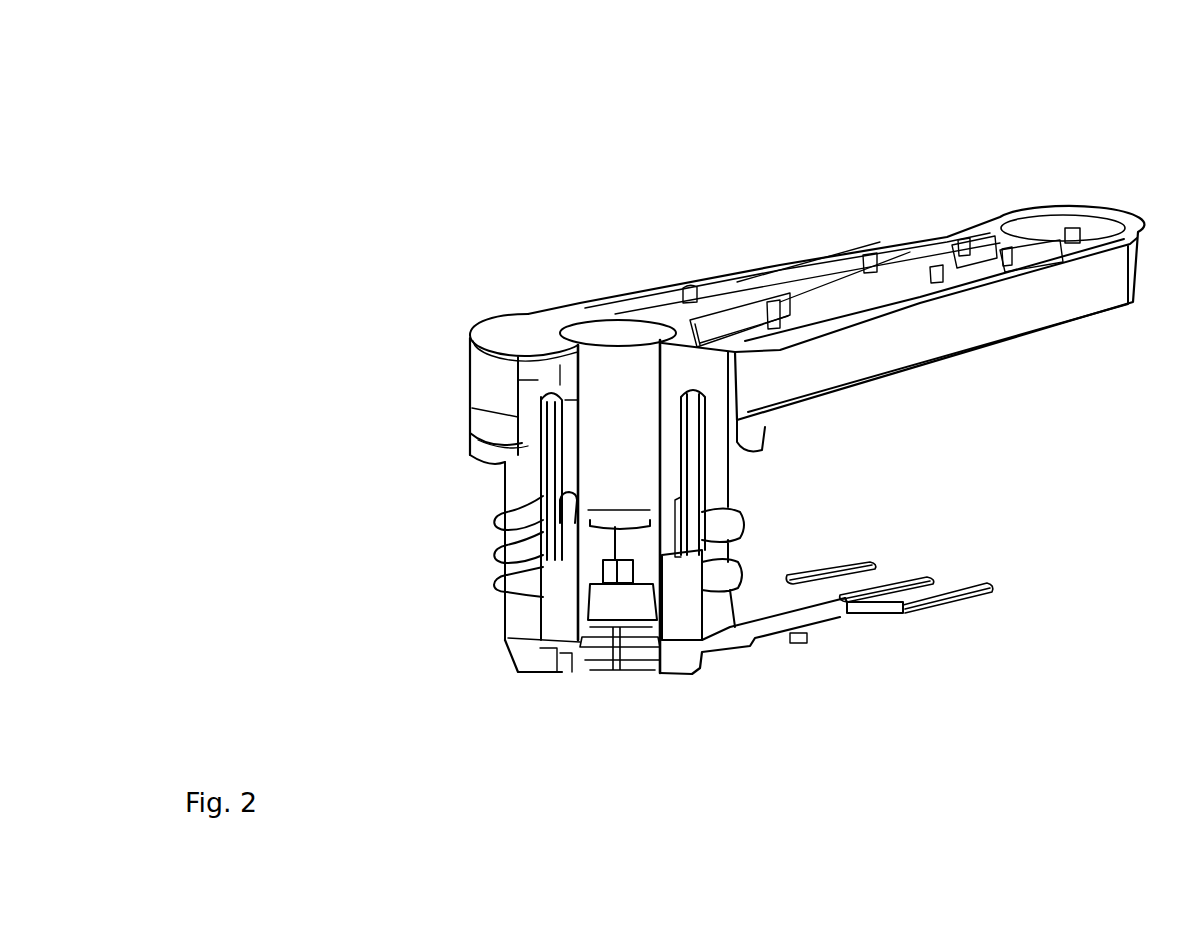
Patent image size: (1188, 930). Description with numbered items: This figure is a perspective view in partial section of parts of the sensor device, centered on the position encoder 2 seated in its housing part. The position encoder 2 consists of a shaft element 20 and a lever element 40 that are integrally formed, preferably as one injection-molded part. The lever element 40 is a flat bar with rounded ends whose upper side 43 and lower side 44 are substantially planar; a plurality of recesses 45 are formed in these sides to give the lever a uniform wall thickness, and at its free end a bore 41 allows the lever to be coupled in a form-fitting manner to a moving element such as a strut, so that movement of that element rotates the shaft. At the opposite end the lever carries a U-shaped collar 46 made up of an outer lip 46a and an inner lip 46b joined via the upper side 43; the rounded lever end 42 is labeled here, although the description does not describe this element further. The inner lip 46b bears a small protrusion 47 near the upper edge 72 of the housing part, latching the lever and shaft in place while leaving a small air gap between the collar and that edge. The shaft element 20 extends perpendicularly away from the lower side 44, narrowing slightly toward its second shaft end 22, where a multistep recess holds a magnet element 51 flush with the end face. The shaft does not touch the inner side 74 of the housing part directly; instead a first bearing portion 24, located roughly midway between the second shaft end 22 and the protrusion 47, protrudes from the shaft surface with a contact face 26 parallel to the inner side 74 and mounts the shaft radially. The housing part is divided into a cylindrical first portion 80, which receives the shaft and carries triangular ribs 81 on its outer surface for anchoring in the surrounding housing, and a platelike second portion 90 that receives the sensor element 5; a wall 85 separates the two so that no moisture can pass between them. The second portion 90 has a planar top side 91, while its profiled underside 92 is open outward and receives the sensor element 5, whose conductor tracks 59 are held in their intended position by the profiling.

The position encoder 2 is at (690, 232).
The sensor element 5 is at (640, 667).
The shaft element 20 is at (613, 357).
The second shaft end 22 is at (580, 549).
The first bearing portion 24 is at (567, 468).
The contact face 26 is at (548, 490).
The lever element 40 is at (1133, 263).
The bore 41 is at (1048, 228).
The cap portion 42 is at (520, 322).
The upper side 43 is at (880, 247).
The lower side 44 is at (1047, 333).
The recesses 45 is at (793, 277).
The collar 46 is at (538, 380).
The outer lip 46a is at (527, 442).
The inner lip 46b is at (570, 370).
The protrusion 47 is at (560, 410).
The magnet element 51 is at (610, 660).
The conductor tracks 59 is at (938, 604).
The upper edge 72 is at (545, 398).
The inner side 74 is at (500, 512).
The first portion 80 is at (722, 470).
The ribs 81 is at (735, 530).
The wall 85 is at (588, 662).
The second portion 90 is at (712, 658).
The top side 91 is at (773, 600).
The underside 92 is at (787, 641).